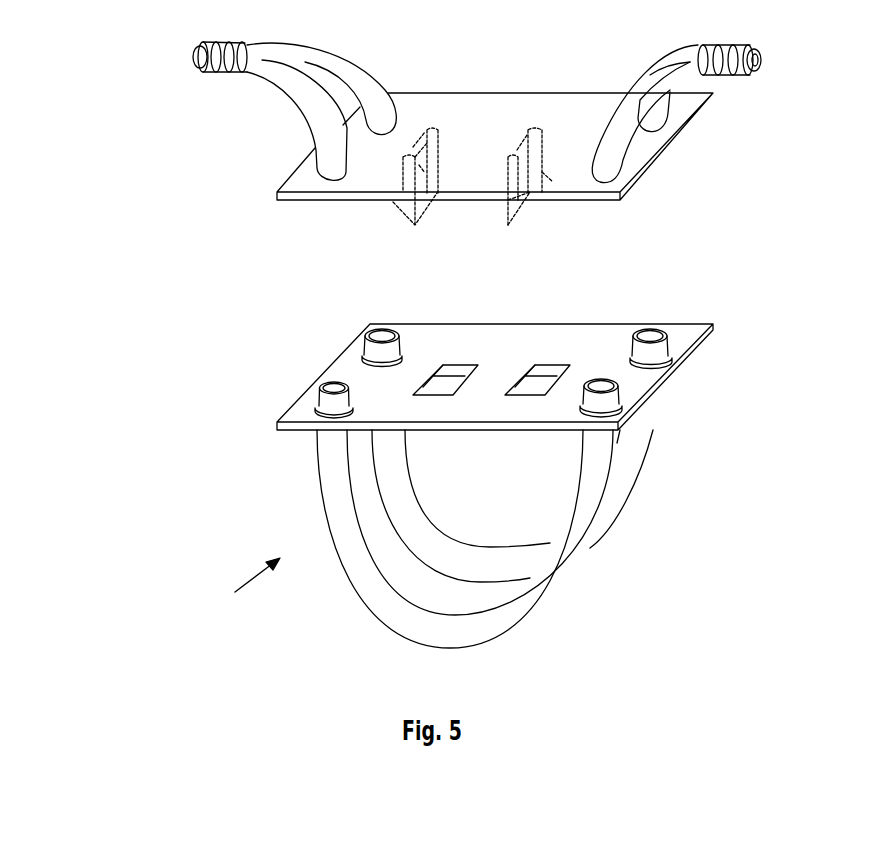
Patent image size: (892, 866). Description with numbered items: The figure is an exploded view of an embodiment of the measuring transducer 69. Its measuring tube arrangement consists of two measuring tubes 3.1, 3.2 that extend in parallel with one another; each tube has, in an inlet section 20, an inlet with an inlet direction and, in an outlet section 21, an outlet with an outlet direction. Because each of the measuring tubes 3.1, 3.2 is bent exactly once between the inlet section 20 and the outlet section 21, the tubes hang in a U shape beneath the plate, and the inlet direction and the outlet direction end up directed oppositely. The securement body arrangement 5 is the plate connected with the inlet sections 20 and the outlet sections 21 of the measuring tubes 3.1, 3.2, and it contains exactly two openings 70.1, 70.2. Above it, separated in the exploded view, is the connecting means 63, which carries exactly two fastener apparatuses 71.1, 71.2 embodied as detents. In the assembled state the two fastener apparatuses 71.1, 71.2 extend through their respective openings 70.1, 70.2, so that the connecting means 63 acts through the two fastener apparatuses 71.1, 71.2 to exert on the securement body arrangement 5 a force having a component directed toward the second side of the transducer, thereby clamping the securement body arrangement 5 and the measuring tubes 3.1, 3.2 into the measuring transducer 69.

The connecting means 63 is at (383, 160).
The fastener apparatus 71.1 is at (393, 202).
The fastener apparatus 71.2 is at (518, 213).
The securement body arrangement 5 is at (302, 410).
The inlet section 20 is at (385, 353).
The outlet section 21 is at (653, 353).
The opening 70.1 is at (428, 380).
The opening 70.2 is at (537, 382).
The measuring tube 3.1 is at (635, 438).
The measuring tube 3.2 is at (552, 583).
The measuring transducer 69 is at (237, 592).